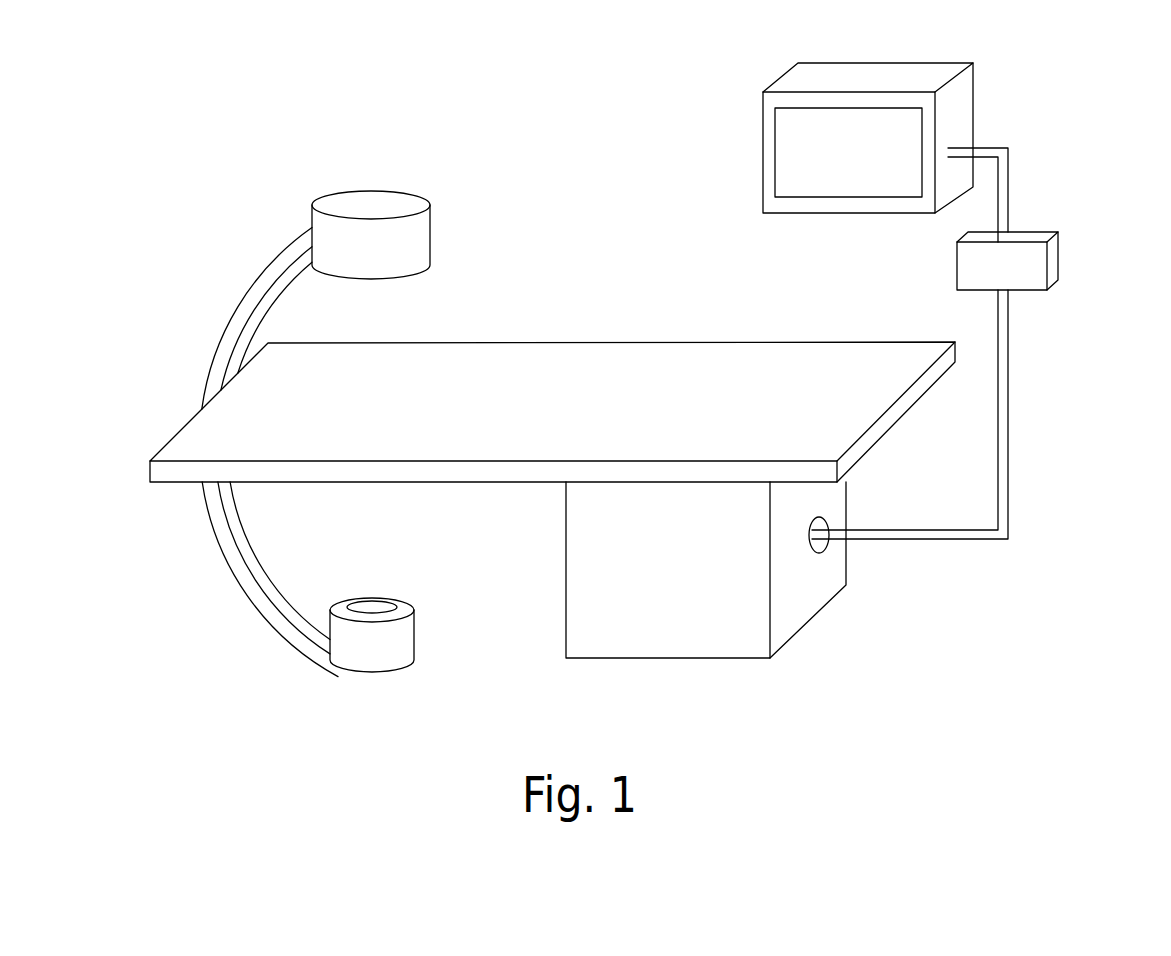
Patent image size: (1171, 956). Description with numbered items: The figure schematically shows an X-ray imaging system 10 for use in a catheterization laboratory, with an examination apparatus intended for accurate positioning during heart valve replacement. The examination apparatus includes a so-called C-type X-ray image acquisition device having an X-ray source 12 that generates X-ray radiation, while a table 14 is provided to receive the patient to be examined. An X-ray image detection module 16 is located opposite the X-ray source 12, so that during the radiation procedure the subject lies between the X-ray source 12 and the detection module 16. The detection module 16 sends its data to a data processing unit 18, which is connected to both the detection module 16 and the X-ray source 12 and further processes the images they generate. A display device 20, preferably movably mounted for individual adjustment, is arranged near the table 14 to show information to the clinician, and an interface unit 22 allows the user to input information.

The X-ray imaging system 10 is at (156, 275).
The X-ray source 12 is at (397, 632).
The table 14 is at (572, 363).
The X-ray image detection module 16 is at (365, 207).
The data processing unit 18 is at (792, 597).
The display device 20 is at (792, 144).
The interface unit 22 is at (1037, 265).